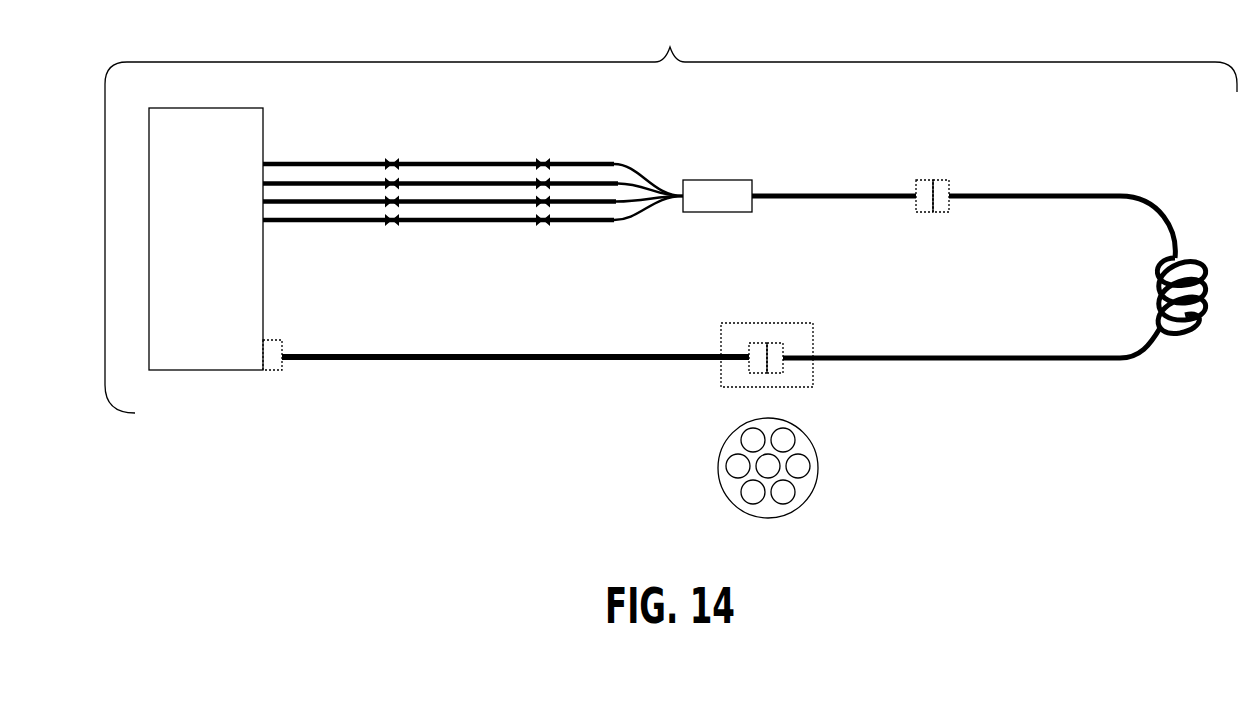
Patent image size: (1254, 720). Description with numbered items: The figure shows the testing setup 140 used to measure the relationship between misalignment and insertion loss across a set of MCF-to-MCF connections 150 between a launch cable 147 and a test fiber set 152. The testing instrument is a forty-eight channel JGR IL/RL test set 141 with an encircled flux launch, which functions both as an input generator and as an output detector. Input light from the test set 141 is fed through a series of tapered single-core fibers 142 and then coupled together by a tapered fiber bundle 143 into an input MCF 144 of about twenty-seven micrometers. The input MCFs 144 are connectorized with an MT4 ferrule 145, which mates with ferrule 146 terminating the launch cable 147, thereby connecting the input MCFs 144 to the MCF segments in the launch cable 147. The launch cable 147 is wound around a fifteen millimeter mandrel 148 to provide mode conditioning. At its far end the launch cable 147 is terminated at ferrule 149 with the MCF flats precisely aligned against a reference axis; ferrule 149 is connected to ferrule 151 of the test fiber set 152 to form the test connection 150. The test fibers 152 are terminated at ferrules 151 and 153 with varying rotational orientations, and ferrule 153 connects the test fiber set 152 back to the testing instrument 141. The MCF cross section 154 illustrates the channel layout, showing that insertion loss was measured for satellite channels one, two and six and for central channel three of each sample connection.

The setup 140 is at (671, 215).
The 48-channel JGR IL/RL test set 141 is at (191, 100).
The tapered single-core fibers 142 is at (453, 151).
The tapered fiber bundle 143 is at (700, 173).
The input MCF 144 is at (817, 186).
The MT4 ferrule 145 is at (918, 188).
The MT4 ferrule 146 is at (947, 188).
The launch cable 147 is at (1022, 186).
The mandrel 148 is at (1122, 290).
The MT4 ferrule 149 is at (781, 350).
The MCF-to-MCF connection 150 is at (752, 318).
The MT4 ferrule 151 is at (751, 350).
The test fiber set 152 is at (490, 341).
The MT4 ferrule 153 is at (280, 346).
The MCF cross section 154 is at (820, 443).